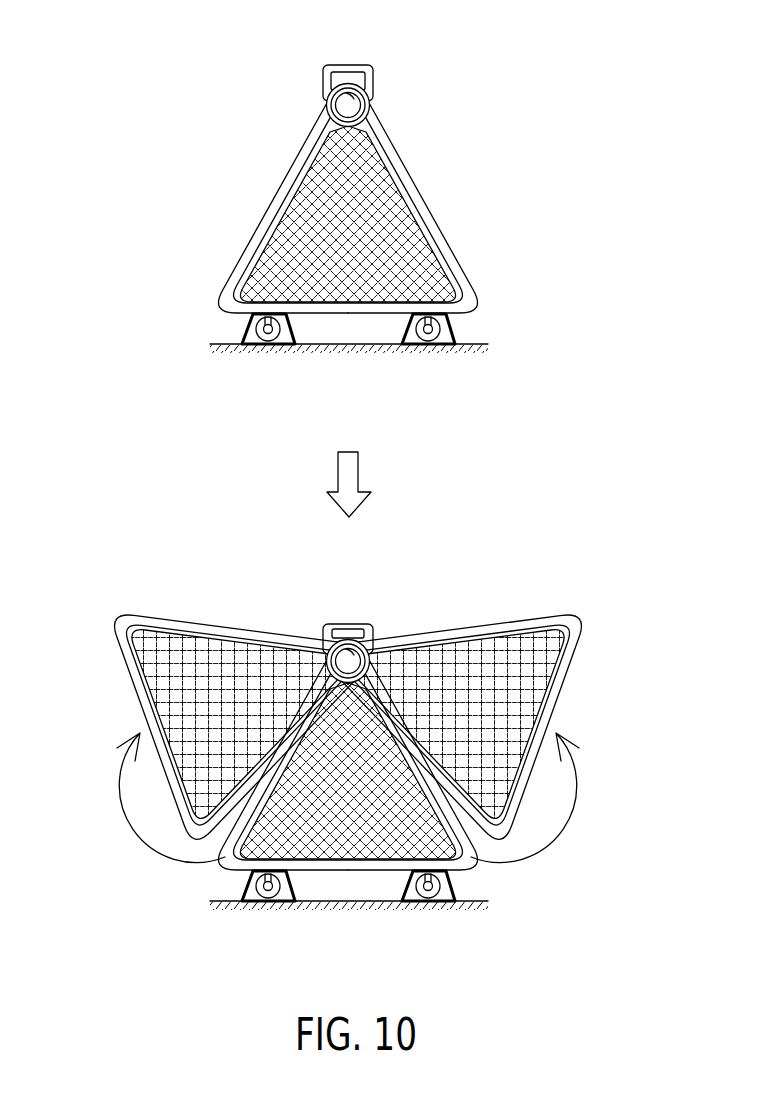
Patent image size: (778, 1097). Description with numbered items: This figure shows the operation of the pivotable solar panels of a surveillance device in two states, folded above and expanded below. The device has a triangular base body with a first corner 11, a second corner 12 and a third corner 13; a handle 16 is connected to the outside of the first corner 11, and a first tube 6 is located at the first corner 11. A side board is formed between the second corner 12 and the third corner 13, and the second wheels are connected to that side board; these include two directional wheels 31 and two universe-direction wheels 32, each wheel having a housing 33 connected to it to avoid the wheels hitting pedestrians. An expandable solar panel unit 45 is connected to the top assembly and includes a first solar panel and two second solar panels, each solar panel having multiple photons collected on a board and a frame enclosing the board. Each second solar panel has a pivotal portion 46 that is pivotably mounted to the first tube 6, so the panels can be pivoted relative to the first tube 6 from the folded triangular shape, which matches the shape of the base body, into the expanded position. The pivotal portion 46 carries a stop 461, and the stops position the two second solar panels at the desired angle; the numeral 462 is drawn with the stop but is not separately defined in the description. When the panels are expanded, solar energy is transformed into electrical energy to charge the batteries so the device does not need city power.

The first tube 6 is at (372, 106).
The first corner 11 is at (340, 331).
The second corner 12 is at (232, 298).
The third corner 13 is at (470, 301).
The handle 16 is at (360, 66).
The directional wheel 31 is at (270, 346).
The universe-direction wheel 32 is at (428, 346).
The housing 33 is at (219, 637).
The expandable solar panel unit 45 is at (375, 526).
The pivotal portion 46 is at (348, 526).
The stop 461 is at (293, 470).
The mesh panel 462 is at (345, 138).